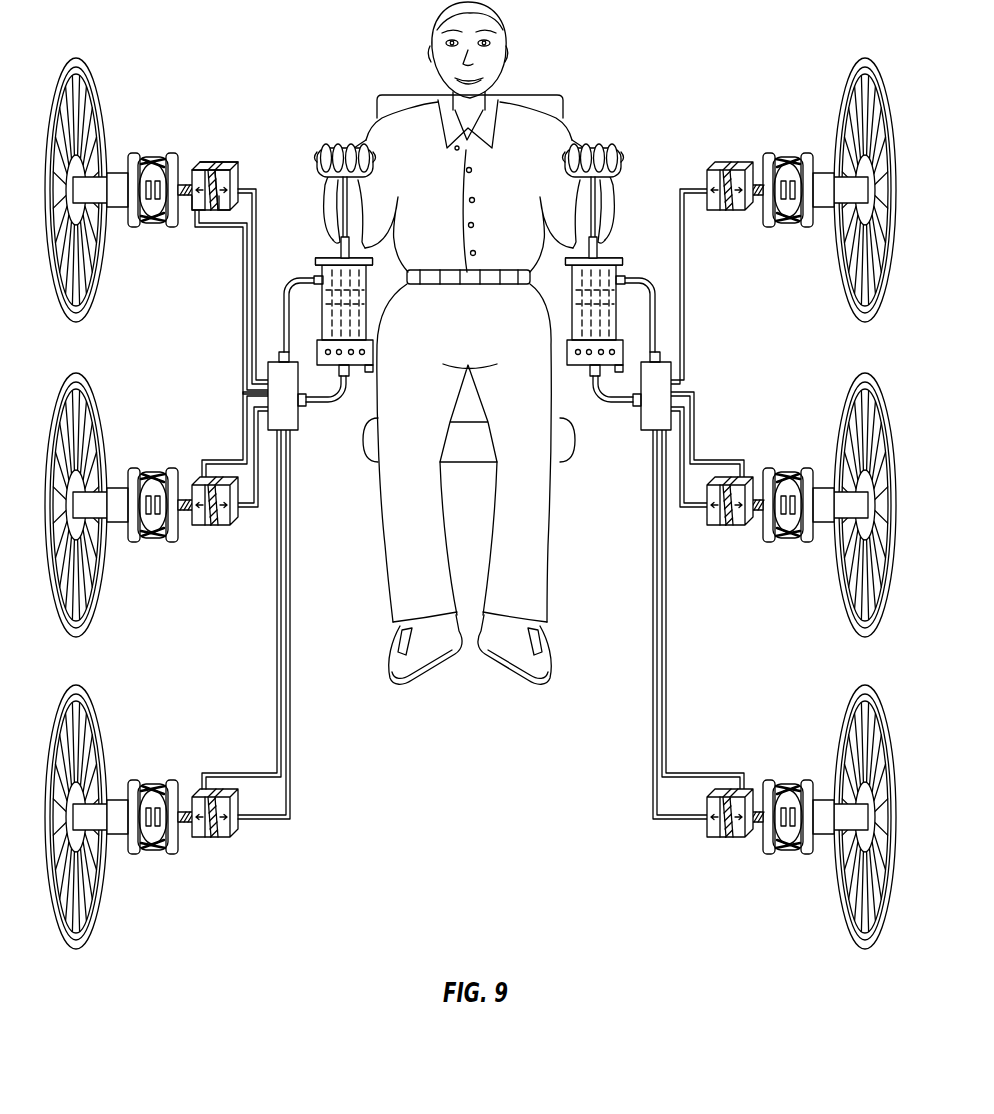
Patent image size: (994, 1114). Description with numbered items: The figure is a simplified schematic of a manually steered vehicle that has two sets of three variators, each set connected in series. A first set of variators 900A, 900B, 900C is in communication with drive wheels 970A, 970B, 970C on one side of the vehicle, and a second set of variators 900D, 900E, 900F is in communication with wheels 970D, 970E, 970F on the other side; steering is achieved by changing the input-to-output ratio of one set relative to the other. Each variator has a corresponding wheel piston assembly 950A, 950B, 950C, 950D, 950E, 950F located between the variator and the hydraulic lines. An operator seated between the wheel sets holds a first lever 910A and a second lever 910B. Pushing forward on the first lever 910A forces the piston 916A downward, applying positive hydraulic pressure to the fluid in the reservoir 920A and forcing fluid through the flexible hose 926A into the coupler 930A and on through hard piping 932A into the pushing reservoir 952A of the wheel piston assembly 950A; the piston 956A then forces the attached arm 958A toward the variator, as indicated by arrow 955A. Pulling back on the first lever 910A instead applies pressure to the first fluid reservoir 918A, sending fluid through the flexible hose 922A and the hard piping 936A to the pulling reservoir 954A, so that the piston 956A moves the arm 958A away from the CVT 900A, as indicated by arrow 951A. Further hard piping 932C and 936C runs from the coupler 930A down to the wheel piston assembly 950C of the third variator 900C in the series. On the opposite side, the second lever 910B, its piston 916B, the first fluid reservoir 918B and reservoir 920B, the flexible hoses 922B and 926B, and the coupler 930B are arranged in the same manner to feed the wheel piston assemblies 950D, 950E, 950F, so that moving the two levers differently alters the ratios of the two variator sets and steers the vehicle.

The variator 900A is at (152, 226).
The variator 900B is at (160, 543).
The variator 900C is at (160, 855).
The variator 900D is at (782, 228).
The variator 900E is at (780, 543).
The variator 900F is at (780, 855).
The first lever 910A is at (332, 148).
The control lever 910B is at (606, 148).
The piston 916A is at (356, 301).
The piston 916B is at (583, 301).
The first fluid reservoir 918A is at (366, 283).
The cylinder cap 918B is at (574, 283).
The reservoir 920A is at (367, 326).
The hydraulic cylinder 920B is at (572, 326).
The flexible hose 922A is at (291, 298).
The hydraulic line 922B is at (635, 314).
The flexible hose 926A is at (330, 403).
The hydraulic line 926B is at (612, 403).
The coupler 930A is at (299, 431).
The manifold 930B is at (641, 431).
The hard piping 932A is at (238, 185).
The hydraulic line 932C is at (291, 628).
The hard piping 936A is at (233, 229).
The hydraulic line 936C is at (279, 735).
The wheel piston assembly 950A is at (204, 126).
The wheel piston assembly 950B is at (216, 528).
The wheel piston assembly 950C is at (216, 838).
The wheel piston assembly 950D is at (720, 213).
The wheel piston assembly 950E is at (721, 528).
The wheel piston assembly 950F is at (721, 840).
The arrow 951A is at (221, 183).
The pushing reservoir 952A is at (224, 207).
The pulling reservoir 954A is at (196, 212).
The arrow 955A is at (202, 165).
The piston 956A is at (214, 162).
The arm 958A is at (186, 186).
The drive wheel 970A is at (74, 320).
The drive wheel 970B is at (74, 637).
The drive wheel 970C is at (74, 950).
The wheel 970D is at (866, 320).
The wheel 970E is at (866, 637).
The wheel 970F is at (866, 950).